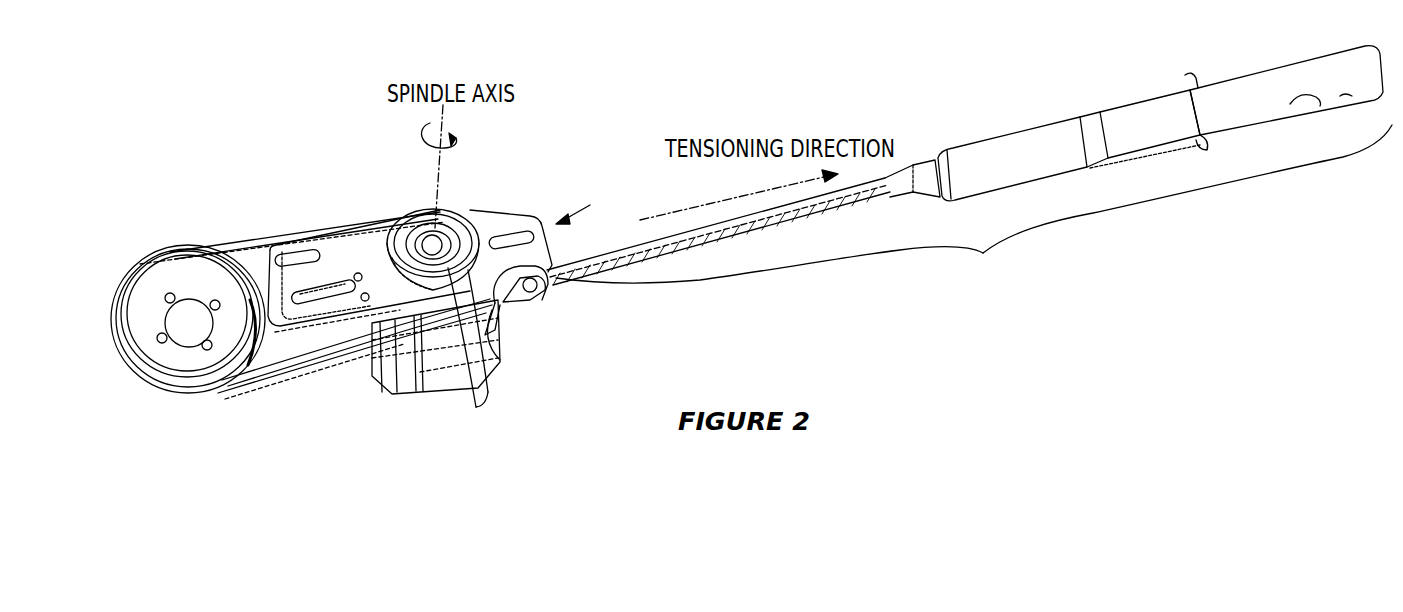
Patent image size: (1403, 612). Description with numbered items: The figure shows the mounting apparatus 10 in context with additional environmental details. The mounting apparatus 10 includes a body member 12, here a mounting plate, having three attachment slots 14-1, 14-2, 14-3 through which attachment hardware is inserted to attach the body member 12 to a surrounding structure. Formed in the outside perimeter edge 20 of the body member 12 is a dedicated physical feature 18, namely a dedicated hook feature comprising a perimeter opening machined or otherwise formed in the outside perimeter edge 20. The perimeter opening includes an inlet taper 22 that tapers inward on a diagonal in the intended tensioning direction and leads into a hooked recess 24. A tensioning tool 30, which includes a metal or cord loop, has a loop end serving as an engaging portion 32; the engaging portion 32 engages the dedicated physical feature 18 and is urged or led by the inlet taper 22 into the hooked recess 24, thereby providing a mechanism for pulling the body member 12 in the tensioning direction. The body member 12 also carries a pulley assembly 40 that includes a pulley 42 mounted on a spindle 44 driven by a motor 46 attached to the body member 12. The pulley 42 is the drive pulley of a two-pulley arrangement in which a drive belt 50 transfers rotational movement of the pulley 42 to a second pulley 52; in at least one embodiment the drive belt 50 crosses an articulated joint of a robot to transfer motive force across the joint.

The mounting apparatus 10 is at (584, 210).
The body member 12 is at (540, 258).
The attachment slot 14-1 is at (505, 240).
The attachment slot 14-2 is at (290, 260).
The attachment slot 14-3 is at (307, 297).
The dedicated physical feature 18 is at (503, 310).
The outside perimeter edge 20 is at (497, 340).
The inlet taper 22 is at (507, 297).
The hooked recess 24 is at (527, 287).
The tensioning tool 30 is at (983, 253).
The engaging portion 32 is at (552, 288).
The pulley assembly 40 is at (460, 327).
The pulley 42 is at (455, 240).
The spindle 44 is at (437, 240).
The motor 46 is at (437, 357).
The drive belt 50 is at (247, 237).
The second pulley 52 is at (158, 280).